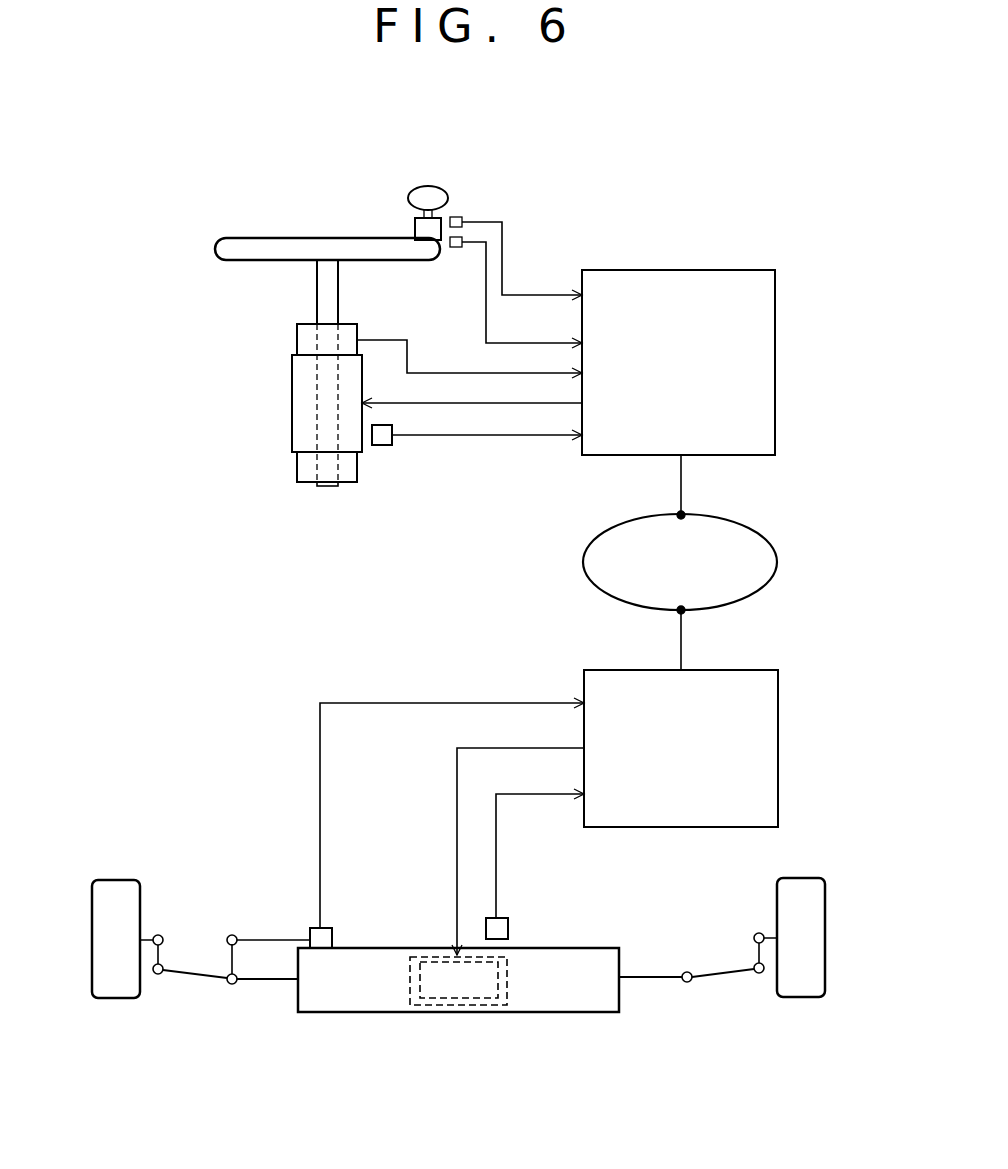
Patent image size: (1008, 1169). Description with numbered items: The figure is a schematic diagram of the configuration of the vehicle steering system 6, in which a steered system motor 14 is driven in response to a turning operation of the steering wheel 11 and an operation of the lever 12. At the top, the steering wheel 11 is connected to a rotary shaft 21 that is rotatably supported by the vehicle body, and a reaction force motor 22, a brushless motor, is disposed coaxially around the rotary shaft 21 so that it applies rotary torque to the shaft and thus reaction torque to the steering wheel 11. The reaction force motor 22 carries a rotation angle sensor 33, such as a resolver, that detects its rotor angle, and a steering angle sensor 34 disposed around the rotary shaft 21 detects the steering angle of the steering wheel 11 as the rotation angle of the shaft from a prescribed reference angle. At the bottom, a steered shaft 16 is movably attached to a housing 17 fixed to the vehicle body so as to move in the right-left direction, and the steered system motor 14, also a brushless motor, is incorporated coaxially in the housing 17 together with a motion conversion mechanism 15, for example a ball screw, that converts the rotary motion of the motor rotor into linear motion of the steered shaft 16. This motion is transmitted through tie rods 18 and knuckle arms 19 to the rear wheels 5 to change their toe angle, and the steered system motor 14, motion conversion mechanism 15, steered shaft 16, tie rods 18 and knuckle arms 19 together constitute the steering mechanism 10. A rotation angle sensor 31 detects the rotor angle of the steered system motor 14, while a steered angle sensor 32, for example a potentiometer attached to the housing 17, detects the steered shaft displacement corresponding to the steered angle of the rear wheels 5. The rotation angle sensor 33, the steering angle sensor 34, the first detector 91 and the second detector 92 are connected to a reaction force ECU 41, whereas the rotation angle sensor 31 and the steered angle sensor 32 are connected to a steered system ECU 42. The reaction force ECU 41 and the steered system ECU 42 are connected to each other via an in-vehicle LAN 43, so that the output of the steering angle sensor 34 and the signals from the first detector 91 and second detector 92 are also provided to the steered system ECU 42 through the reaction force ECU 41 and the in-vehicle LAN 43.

The rear wheels 5 is at (117, 999).
The vehicle steering system 6 is at (586, 200).
The steering mechanism 10 is at (494, 1036).
The steering wheel 11 is at (258, 237).
The lever 12 is at (428, 186).
The steered system motor 14 is at (410, 979).
The motion conversion mechanism 15 is at (445, 1003).
The steered shaft 16 is at (265, 980).
The housing 17 is at (580, 1013).
The tie rods 18 is at (190, 976).
The knuckle arms 19 is at (164, 955).
The rotary shaft 21 is at (317, 290).
The reaction force motor 22 is at (292, 404).
The rotation angle sensor 31 is at (508, 930).
The steered angle sensor 32 is at (332, 935).
The rotation angle sensor 33 is at (382, 447).
The steering angle sensor 34 is at (297, 336).
The reaction force ECU 41 is at (775, 358).
The steered system ECU 42 is at (778, 745).
The in-vehicle LAN 43 is at (777, 548).
The first detector 91 is at (456, 216).
The second detector 92 is at (456, 248).